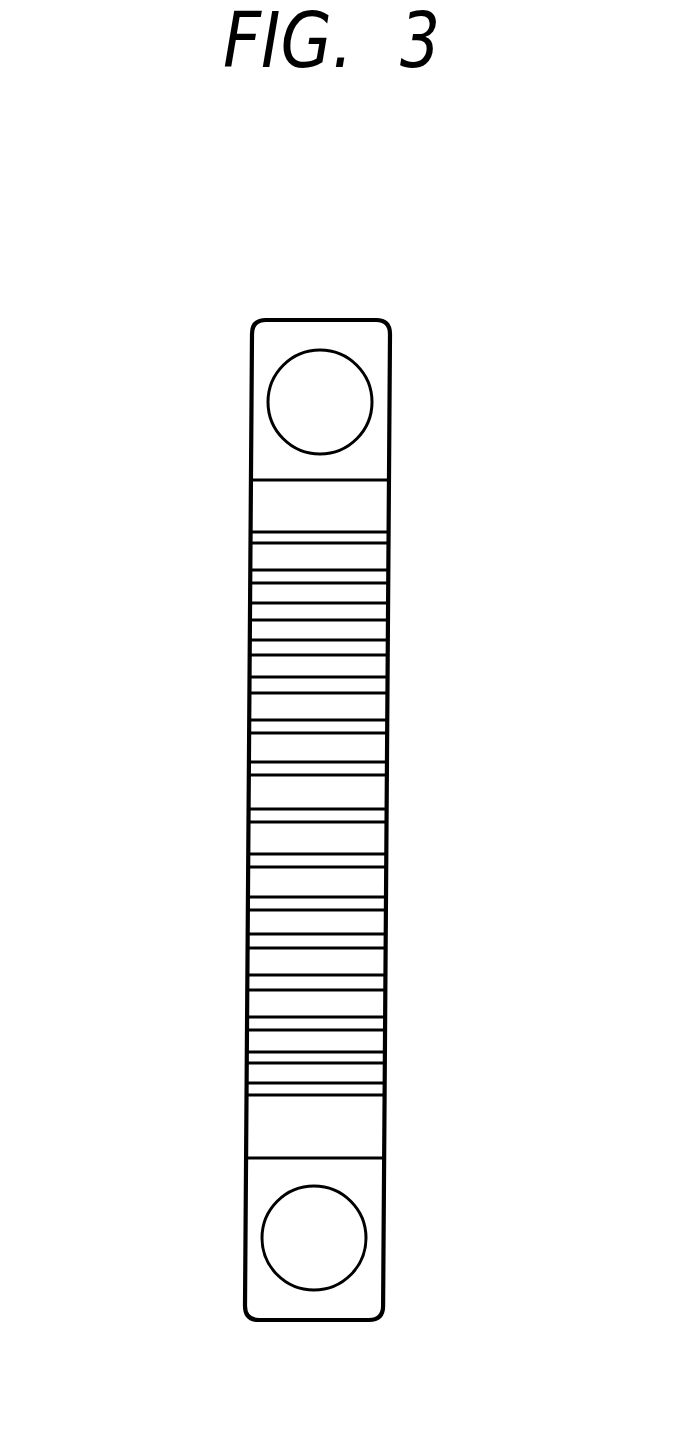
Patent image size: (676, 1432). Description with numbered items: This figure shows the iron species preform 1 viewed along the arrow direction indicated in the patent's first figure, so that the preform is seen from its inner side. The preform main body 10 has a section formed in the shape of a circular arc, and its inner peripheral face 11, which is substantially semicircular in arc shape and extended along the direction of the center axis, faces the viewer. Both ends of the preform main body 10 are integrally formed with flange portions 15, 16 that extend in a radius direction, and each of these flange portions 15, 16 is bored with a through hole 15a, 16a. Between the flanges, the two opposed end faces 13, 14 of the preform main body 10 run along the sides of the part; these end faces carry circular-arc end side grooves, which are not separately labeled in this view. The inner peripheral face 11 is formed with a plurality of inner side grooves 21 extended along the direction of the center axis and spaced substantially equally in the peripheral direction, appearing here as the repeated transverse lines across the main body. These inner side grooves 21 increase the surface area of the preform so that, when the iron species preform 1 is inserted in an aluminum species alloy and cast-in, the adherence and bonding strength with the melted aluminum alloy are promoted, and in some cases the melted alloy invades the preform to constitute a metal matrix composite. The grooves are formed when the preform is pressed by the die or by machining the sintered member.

The iron species preform 1 is at (402, 288).
The preform main body 10 is at (210, 709).
The inner peripheral face 11 is at (370, 838).
The end face 13 is at (247, 913).
The end face 14 is at (385, 922).
The flange portion 15 is at (245, 1298).
The through hole 15a is at (348, 1237).
The flange portion 16 is at (253, 357).
The through hole 16a is at (352, 397).
The inner side groove 21 is at (372, 535).